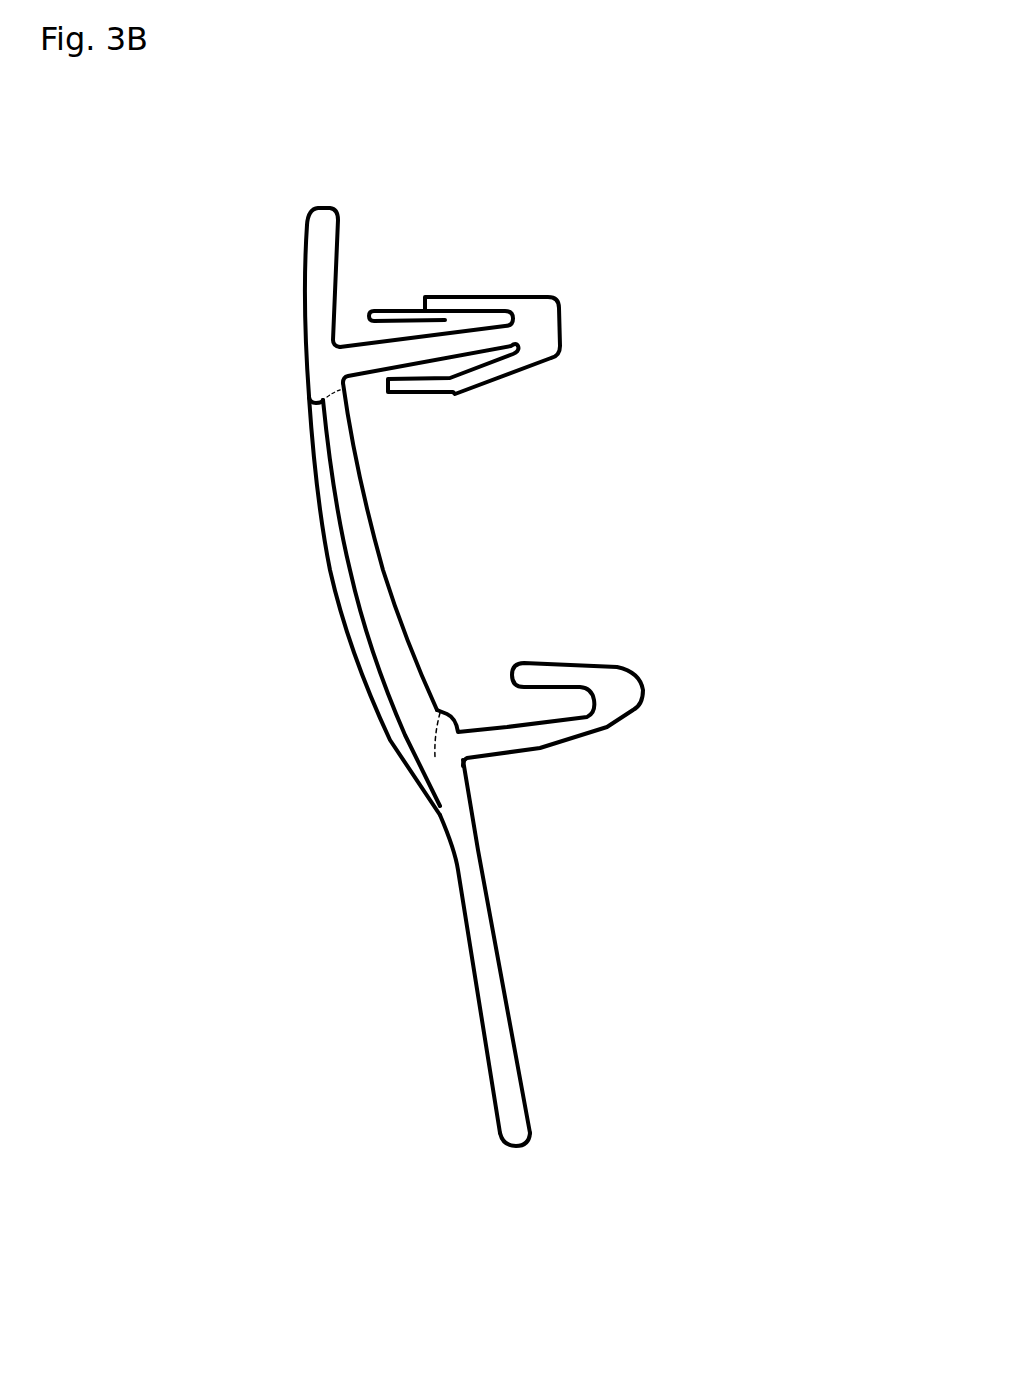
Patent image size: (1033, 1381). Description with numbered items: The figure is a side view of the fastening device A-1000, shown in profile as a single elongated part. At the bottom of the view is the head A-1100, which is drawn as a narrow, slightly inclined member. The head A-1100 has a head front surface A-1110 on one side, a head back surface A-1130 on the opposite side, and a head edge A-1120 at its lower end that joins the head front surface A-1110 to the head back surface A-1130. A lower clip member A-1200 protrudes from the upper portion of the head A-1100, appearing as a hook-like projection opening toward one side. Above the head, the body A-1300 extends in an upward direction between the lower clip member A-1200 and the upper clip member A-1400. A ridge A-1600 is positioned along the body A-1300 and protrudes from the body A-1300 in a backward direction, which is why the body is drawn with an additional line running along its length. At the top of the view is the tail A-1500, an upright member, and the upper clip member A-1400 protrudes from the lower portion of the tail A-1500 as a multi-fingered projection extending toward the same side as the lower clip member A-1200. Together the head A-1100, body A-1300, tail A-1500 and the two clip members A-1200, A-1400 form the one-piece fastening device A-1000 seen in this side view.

The fastening device A-1000 is at (673, 250).
The tail A-1500 is at (385, 215).
The upper clip member A-1400 is at (590, 330).
The body A-1300 is at (412, 579).
The ridge A-1600 is at (327, 572).
The lower clip member A-1200 is at (651, 715).
The head A-1100 is at (561, 1206).
The head back surface A-1130 is at (478, 1033).
The head front surface A-1110 is at (503, 1017).
The head edge A-1120 is at (495, 1127).